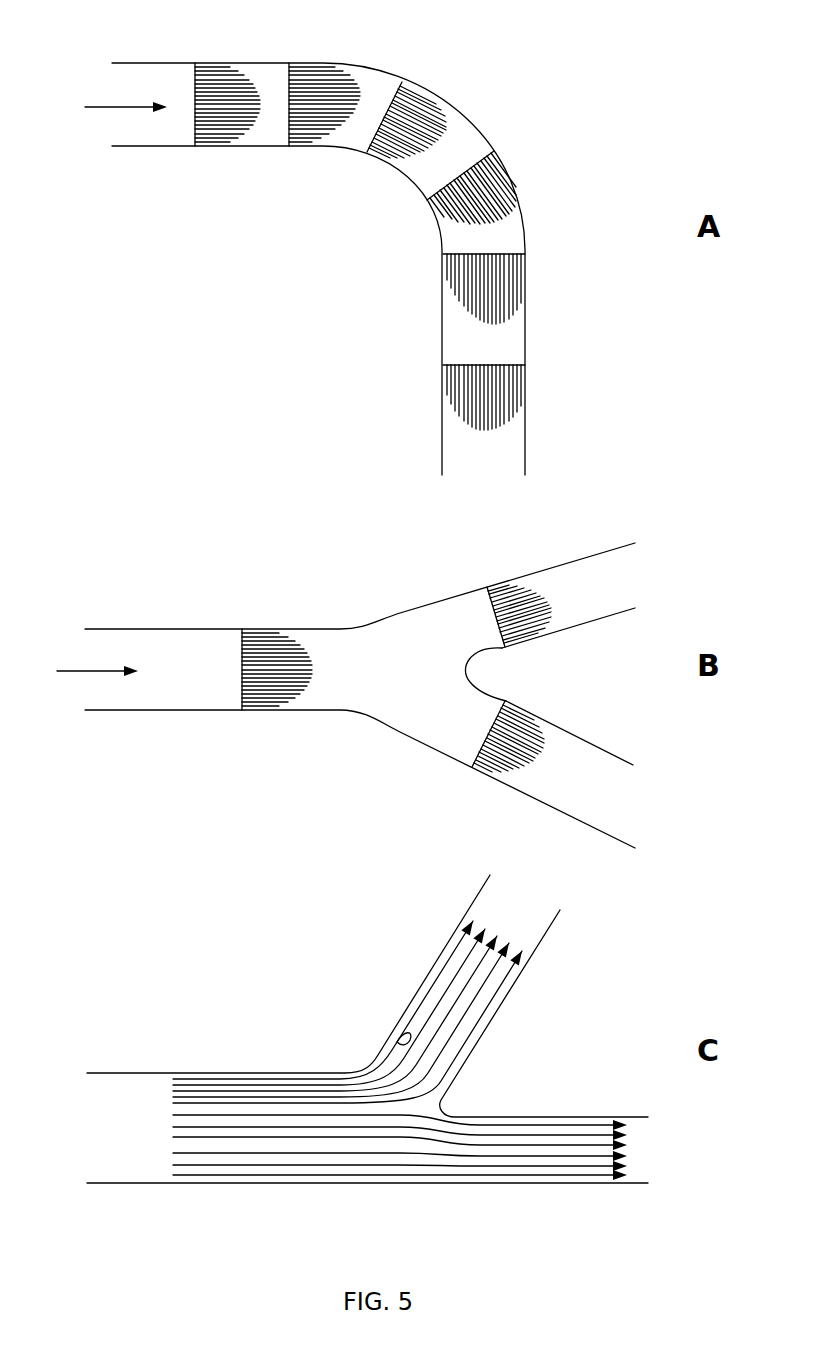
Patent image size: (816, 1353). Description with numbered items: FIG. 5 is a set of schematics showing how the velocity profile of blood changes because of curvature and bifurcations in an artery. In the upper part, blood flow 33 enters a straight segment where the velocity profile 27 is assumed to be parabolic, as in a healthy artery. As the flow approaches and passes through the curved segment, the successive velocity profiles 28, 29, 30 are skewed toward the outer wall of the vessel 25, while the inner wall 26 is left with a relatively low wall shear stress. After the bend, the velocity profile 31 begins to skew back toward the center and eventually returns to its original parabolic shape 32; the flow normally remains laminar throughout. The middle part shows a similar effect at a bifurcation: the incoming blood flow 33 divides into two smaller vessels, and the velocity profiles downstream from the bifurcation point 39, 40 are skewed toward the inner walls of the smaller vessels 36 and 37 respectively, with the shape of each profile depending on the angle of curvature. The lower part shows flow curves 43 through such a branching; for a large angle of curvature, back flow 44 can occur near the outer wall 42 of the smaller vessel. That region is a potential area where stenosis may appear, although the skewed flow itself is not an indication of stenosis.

The outer wall of the vessel 25 is at (167, 63).
The inner wall 26 is at (167, 146).
The velocity profile 27 is at (243, 98).
The velocity profile 28 is at (335, 100).
The velocity profile 29 is at (425, 103).
The velocity profile 30 is at (488, 182).
The velocity profile 31 is at (487, 288).
The parabolic shape 32 is at (487, 398).
The blood flow 33 is at (128, 105).
The inner wall of the smaller vessel 36 is at (607, 618).
The inner wall of the smaller vessel 37 is at (608, 748).
The velocity profile downstream from a bifurcation point 39 is at (495, 600).
The velocity profile downstream from a bifurcation point 40 is at (496, 766).
The outer wall of the smaller vessels 42 is at (463, 915).
The flow curves 43 is at (310, 1083).
The back flow 44 is at (392, 1028).